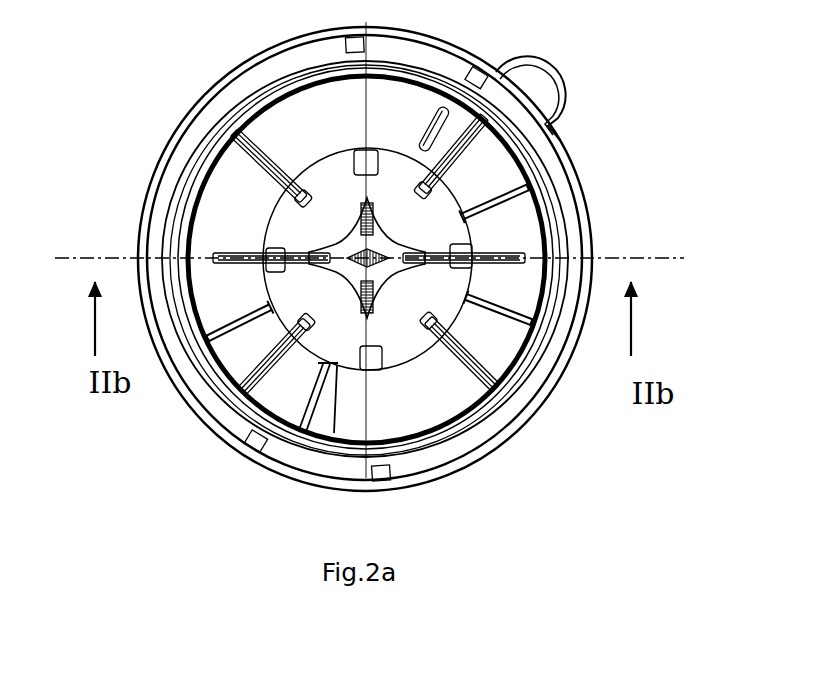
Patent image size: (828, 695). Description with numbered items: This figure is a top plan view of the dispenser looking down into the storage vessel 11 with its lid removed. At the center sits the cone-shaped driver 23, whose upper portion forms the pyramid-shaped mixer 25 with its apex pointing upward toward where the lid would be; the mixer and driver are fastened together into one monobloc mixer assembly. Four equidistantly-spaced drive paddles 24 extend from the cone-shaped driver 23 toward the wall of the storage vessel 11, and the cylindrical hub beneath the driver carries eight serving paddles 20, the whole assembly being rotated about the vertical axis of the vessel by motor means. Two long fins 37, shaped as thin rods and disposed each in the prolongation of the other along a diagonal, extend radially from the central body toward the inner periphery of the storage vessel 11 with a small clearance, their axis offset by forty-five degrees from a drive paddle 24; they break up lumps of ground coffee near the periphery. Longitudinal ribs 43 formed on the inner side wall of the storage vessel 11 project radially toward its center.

The storage vessel 11 is at (559, 138).
The serving paddles 20 is at (470, 210).
The cone-shaped driver 23 is at (317, 180).
The drive paddles 24 is at (242, 135).
The pyramid-shaped mixer 25 is at (388, 230).
The long fins 37 is at (221, 251).
The longitudinal ribs 43 is at (222, 150).